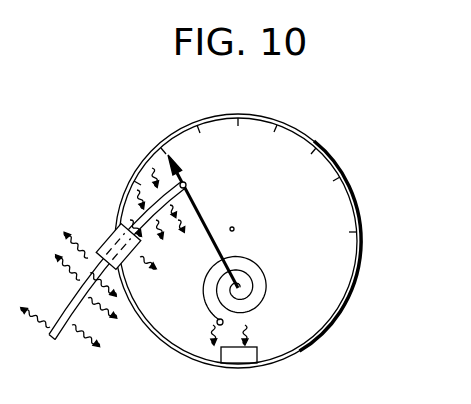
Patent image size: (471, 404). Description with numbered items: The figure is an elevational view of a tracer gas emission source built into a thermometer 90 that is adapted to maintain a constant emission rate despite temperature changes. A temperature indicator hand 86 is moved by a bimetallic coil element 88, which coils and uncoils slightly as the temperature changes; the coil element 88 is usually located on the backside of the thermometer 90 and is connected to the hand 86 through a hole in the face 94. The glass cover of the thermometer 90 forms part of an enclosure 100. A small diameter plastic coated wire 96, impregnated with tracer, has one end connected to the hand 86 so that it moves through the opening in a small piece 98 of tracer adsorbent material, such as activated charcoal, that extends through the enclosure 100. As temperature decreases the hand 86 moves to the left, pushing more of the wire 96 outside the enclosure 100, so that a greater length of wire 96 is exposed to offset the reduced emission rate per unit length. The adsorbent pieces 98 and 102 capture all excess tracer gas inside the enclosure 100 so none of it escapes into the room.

The temperature indicator hand 86 is at (222, 261).
The bimetallic coil element 88 is at (263, 280).
The thermometer 90 is at (355, 87).
The face 94 is at (327, 189).
The plastic coated wire 96 is at (72, 296).
The piece of tracer adsorbent material 98 is at (116, 226).
The enclosure 100 is at (194, 122).
The piece of adsorbent material 102 is at (258, 354).